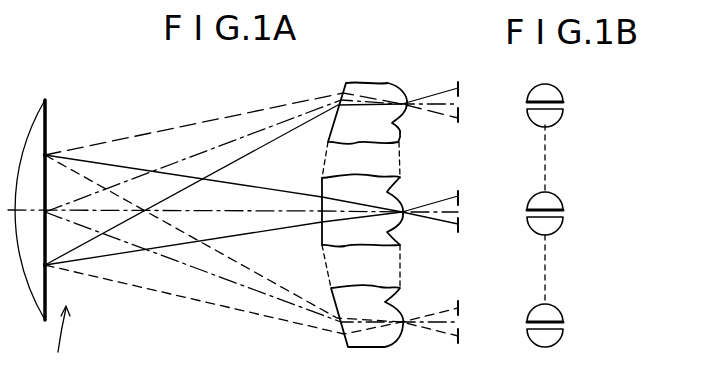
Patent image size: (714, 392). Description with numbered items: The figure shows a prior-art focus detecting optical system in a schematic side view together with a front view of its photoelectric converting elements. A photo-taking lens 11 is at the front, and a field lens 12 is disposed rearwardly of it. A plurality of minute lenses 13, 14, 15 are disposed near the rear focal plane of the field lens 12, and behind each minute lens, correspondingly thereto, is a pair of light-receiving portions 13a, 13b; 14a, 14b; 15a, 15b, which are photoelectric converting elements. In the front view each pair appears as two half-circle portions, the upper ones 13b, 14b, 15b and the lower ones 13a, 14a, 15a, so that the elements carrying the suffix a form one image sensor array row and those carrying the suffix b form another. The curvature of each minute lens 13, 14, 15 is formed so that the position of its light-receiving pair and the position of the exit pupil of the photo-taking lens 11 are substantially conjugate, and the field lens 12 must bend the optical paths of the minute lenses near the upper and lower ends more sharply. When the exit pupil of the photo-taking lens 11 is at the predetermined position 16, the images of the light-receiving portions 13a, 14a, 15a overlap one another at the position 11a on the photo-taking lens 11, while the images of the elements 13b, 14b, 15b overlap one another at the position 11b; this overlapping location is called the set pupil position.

In FIG. 1A, the photo-taking lens 11 is at (47, 108).
In FIG. 1A, the position on the photo-taking lens 11a is at (47, 153).
In FIG. 1A, the position on the photo-taking lens 11b is at (47, 267).
In FIG. 1A, the field lens 12 is at (332, 126).
In FIG. 1A, the minute lens 13 is at (400, 96).
In FIG. 1A, the minute lens 14 is at (402, 205).
In FIG. 1A, the minute lens 15 is at (402, 312).
In FIG. 1A, the light-receiving portion 13a is at (459, 115).
In FIG. 1B, the light-receiving portion 13a is at (553, 116).
In FIG. 1A, the light-receiving portion 13b is at (459, 90).
In FIG. 1B, the light-receiving portion 13b is at (555, 89).
In FIG. 1A, the light-receiving portion 14a is at (459, 226).
In FIG. 1B, the light-receiving portion 14a is at (553, 224).
In FIG. 1A, the light-receiving portion 14b is at (459, 198).
In FIG. 1B, the light-receiving portion 14b is at (555, 197).
In FIG. 1A, the light-receiving portion 15a is at (459, 336).
In FIG. 1B, the light-receiving portion 15a is at (553, 336).
In FIG. 1A, the light-receiving portion 15b is at (459, 307).
In FIG. 1B, the light-receiving portion 15b is at (555, 309).
In FIG. 1A, the predetermined position 16 is at (64, 342).